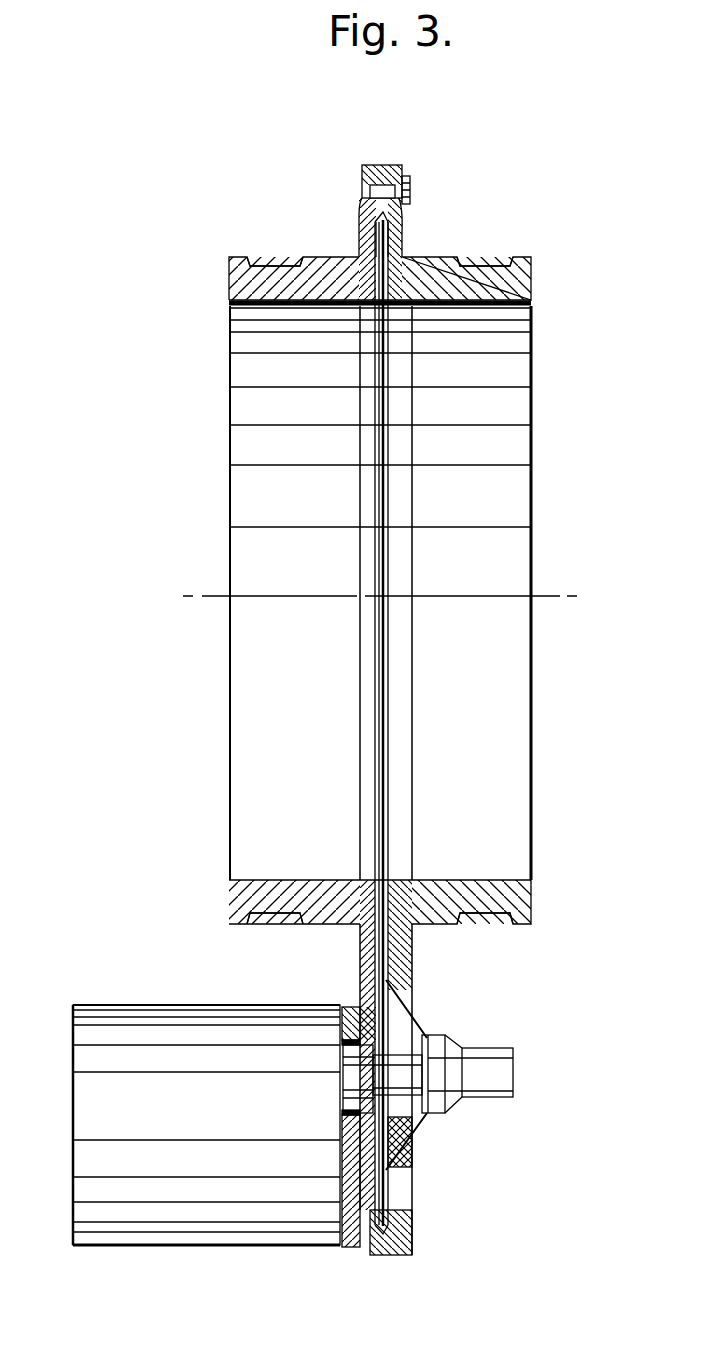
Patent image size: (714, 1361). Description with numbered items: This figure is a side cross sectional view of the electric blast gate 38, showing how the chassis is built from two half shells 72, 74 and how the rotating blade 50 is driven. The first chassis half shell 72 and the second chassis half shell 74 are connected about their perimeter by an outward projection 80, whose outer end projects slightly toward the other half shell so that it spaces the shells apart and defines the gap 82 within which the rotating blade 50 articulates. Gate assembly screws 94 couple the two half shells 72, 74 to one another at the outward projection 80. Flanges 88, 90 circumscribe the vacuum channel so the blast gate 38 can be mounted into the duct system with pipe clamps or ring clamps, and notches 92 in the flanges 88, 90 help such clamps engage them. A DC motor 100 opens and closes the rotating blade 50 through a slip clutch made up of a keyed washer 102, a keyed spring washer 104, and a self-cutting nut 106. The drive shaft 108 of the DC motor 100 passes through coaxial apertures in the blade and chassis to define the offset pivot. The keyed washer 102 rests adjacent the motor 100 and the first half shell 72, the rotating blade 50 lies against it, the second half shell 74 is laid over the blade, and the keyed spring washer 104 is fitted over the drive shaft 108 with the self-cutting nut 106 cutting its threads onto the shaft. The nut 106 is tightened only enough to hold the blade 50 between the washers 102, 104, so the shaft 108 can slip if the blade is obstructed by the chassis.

The blast gate 38 is at (193, 247).
The rotating blade 50 is at (382, 617).
The first chassis half shell 72 is at (240, 283).
The second chassis half shell 74 is at (518, 308).
The outward projection 80 is at (363, 214).
The gap 82 is at (385, 237).
The flange 88 is at (229, 897).
The flange 90 is at (533, 898).
The notches 92 is at (273, 265).
The gate assembly screws 94 is at (407, 178).
The DC motor 100 is at (135, 1020).
The keyed washer 102 is at (405, 1208).
The keyed spring washer 104 is at (410, 1167).
The self-cutting nut 106 is at (432, 1033).
The drive shaft 108 is at (510, 1080).